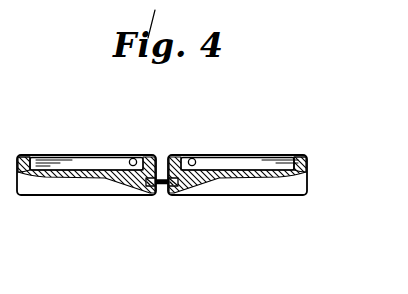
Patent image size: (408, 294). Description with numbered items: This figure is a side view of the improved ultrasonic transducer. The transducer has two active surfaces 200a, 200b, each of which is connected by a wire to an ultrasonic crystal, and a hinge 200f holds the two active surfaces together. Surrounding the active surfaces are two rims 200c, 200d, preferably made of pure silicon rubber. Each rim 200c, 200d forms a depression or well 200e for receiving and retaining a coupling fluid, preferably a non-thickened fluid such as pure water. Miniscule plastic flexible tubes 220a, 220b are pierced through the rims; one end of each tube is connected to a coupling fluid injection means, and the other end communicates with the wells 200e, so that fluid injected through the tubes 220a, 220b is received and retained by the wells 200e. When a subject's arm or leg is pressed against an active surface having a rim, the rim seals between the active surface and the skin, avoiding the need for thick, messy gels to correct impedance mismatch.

The active surface 200a is at (82, 194).
The active surface 200b is at (253, 187).
The rim 200c is at (22, 156).
The rim 200d is at (300, 155).
The well 200e is at (112, 165).
The hinge 200f is at (162, 185).
The flexible tube 220a is at (134, 158).
The flexible tube 220b is at (191, 158).